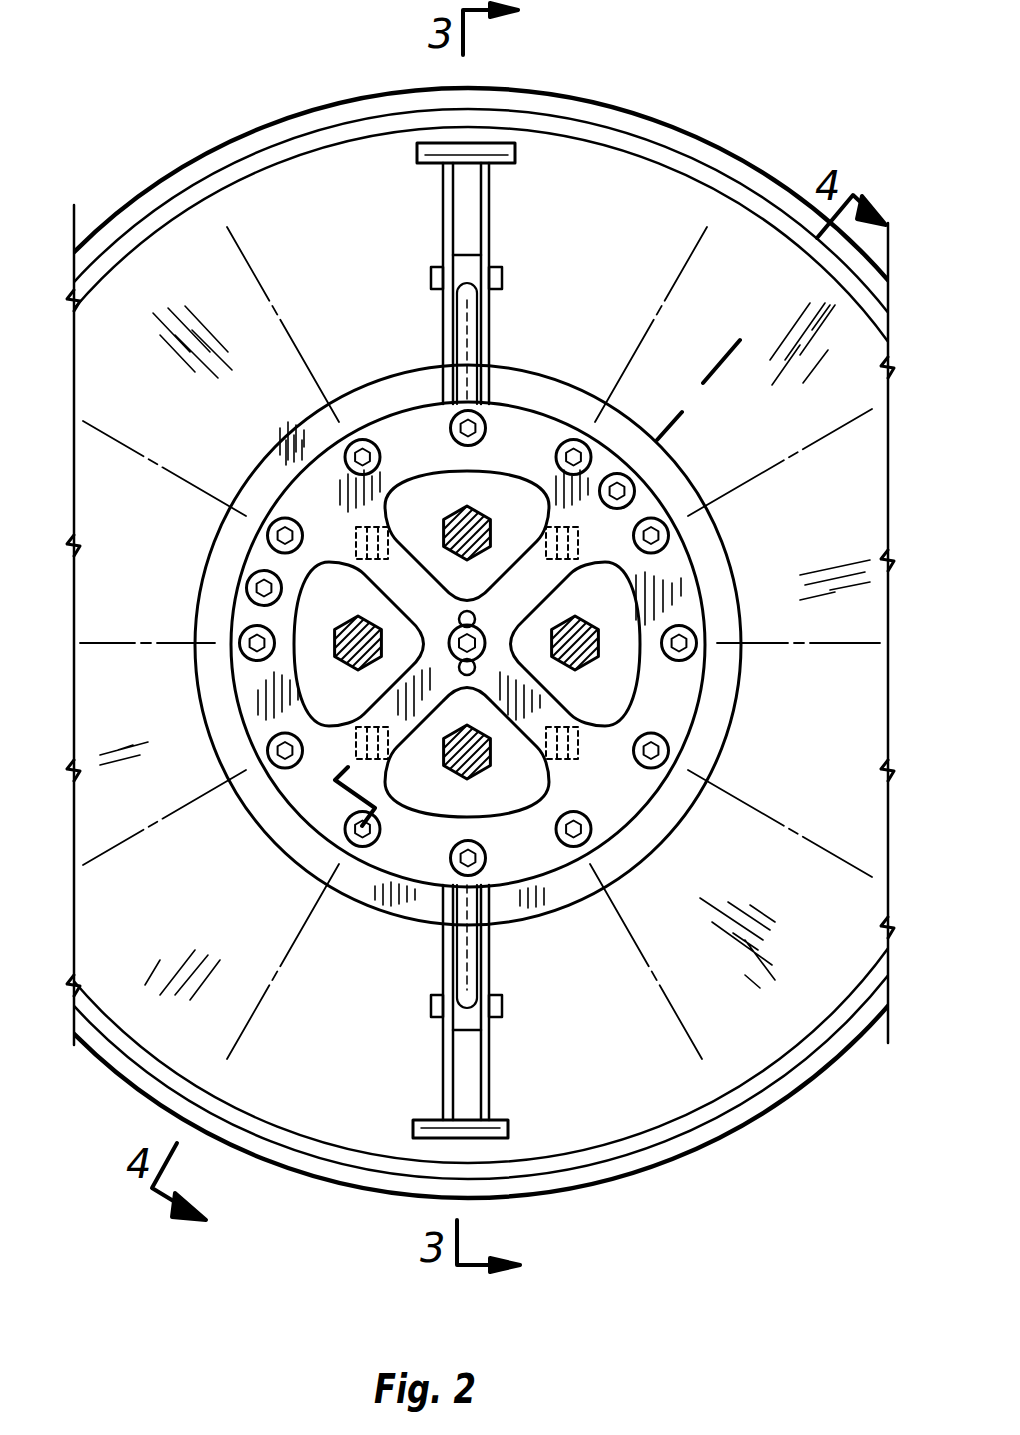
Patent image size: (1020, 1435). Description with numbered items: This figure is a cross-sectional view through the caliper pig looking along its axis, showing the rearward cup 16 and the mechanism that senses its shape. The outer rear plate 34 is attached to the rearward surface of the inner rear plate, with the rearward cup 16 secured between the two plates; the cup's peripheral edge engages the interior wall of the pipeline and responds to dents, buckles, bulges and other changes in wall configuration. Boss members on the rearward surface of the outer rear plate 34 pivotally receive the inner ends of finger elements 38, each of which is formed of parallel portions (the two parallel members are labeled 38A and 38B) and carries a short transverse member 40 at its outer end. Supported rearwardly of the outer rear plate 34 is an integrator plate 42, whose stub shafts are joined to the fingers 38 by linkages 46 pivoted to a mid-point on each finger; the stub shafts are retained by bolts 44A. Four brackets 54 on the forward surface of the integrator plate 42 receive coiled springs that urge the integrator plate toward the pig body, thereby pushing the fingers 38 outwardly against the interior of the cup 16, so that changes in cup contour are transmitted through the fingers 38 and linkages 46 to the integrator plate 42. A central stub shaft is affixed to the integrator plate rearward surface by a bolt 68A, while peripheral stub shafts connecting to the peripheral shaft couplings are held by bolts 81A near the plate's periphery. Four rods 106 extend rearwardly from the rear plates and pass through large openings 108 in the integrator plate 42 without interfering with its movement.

The rearward cup 16 is at (735, 165).
The outer rear plate 34 is at (700, 778).
The finger element 38 is at (466, 641).
The bracket member 38A is at (484, 228).
The bracket member 38B is at (446, 232).
The transverse member 40 is at (505, 153).
The integrator plate 42 is at (690, 698).
The bolt 44A is at (268, 532).
The linkage 46 is at (466, 342).
The bracket 54 is at (584, 757).
The bolt 68A is at (452, 632).
The bolt 81A is at (247, 587).
The rod 106 is at (490, 526).
The opening 108 is at (497, 577).